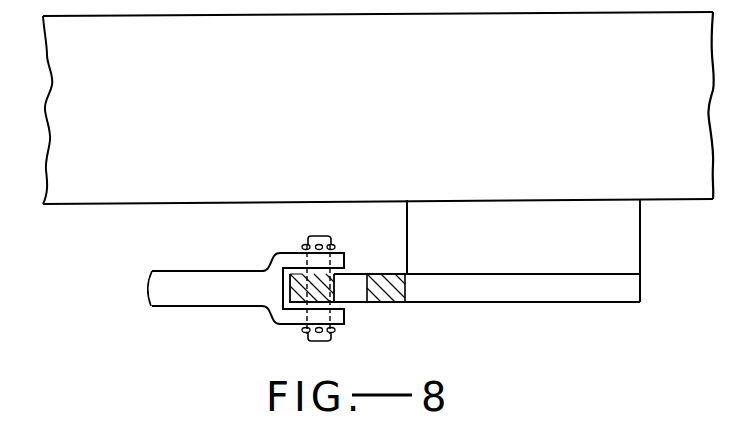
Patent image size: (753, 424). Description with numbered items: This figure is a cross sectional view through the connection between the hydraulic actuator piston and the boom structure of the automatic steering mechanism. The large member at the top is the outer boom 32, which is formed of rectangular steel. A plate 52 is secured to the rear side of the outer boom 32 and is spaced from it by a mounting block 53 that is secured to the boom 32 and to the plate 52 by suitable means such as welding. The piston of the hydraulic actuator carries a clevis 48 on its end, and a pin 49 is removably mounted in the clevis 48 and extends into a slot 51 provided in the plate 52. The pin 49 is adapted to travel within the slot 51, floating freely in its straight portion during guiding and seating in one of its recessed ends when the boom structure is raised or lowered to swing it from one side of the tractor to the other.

The outer boom 32 is at (677, 190).
The clevis 48 is at (195, 283).
The pin 49 is at (327, 341).
The slot 51 is at (358, 283).
The plate 52 is at (466, 290).
The mounting block 53 is at (628, 252).